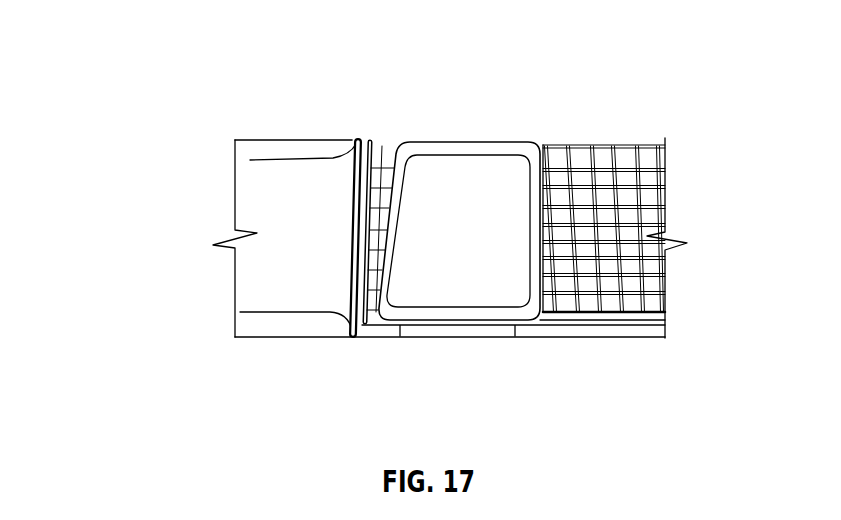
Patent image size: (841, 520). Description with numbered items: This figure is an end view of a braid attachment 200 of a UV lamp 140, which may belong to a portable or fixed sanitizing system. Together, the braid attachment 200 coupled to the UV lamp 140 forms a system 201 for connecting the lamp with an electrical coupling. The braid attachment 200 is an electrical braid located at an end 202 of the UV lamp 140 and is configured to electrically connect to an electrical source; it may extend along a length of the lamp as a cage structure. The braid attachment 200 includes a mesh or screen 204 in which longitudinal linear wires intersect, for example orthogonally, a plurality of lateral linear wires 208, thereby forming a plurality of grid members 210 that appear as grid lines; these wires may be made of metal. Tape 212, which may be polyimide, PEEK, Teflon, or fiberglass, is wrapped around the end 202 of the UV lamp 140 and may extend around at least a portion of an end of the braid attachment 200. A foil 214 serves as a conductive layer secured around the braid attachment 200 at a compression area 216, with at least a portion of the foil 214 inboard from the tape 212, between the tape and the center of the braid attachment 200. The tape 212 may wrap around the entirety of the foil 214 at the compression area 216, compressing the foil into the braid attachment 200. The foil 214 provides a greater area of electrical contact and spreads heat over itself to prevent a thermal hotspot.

The UV lamp 140 is at (150, 172).
The system 201 is at (210, 58).
The braid attachment 200 is at (263, 127).
The tape 212 is at (267, 197).
The end 202 is at (257, 287).
The compression area 216 is at (358, 118).
The foil 214 is at (418, 257).
The mesh or screen 204 is at (645, 142).
The lateral linear wires 208 is at (595, 160).
The grid members 210 is at (653, 168).